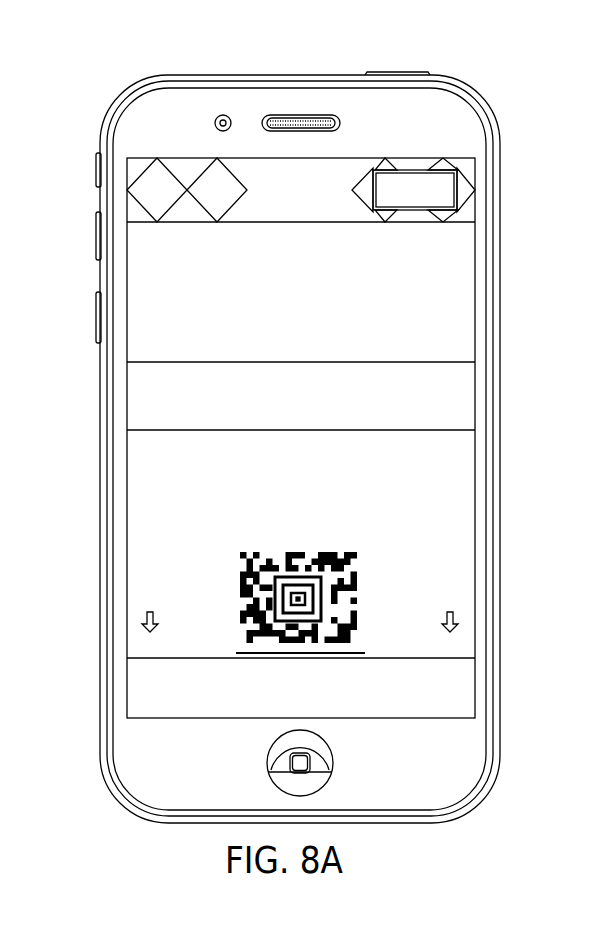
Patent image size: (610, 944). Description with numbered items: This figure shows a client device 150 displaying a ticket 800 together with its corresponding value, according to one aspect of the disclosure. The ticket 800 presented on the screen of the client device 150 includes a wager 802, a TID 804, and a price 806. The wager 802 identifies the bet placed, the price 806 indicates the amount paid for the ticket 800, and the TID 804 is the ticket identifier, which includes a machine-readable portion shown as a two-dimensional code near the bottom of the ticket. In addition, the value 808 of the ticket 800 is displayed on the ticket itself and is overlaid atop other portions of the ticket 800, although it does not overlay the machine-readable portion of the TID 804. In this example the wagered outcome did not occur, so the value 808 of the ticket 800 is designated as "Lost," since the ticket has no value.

The client device 150 is at (74, 86).
The ticket 800 is at (450, 290).
The wager 802 is at (135, 345).
The TID 804 is at (368, 598).
The price 806 is at (455, 395).
The value 808 is at (333, 393).